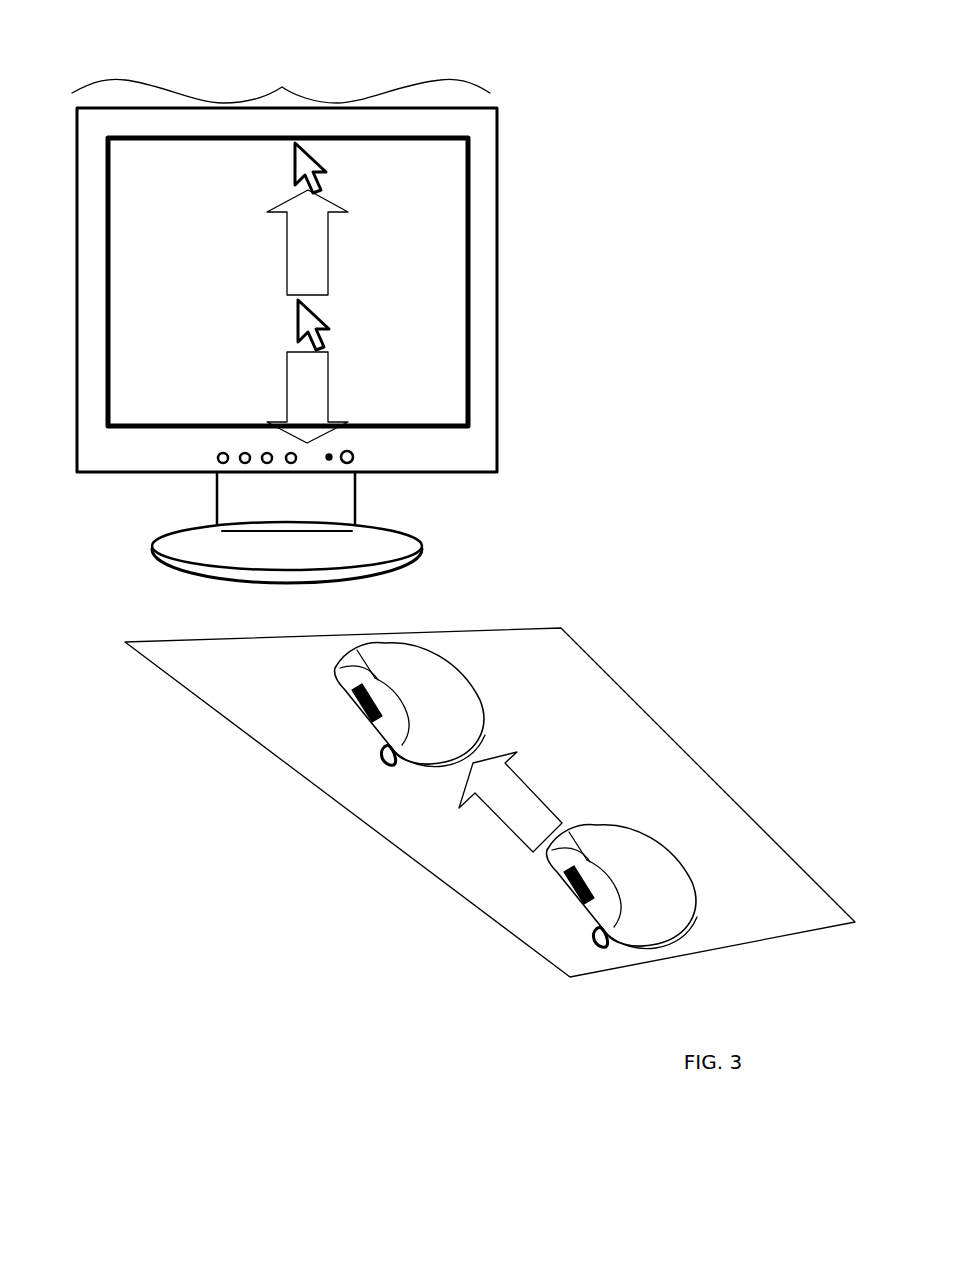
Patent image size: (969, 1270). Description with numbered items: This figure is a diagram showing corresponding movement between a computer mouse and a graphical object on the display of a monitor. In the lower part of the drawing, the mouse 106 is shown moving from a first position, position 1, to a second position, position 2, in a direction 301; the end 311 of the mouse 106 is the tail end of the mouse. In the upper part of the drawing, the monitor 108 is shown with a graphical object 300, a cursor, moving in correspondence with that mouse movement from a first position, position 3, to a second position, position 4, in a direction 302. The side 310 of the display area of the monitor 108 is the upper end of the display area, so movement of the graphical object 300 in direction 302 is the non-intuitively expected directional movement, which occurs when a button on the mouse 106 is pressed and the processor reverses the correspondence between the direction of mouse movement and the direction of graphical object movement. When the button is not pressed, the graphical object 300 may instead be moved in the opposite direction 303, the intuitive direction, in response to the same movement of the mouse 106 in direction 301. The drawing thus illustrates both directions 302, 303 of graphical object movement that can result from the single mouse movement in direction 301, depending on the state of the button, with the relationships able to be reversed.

The side 310 is at (262, 87).
The graphical object 300 is at (74, 578).
The position 4 is at (348, 175).
The direction 302 is at (287, 260).
The direction 303 is at (287, 363).
The position 3 is at (348, 328).
The monitor 108 is at (463, 404).
The mouse 106 is at (437, 680).
The direction 301 is at (510, 802).
The position 2 is at (322, 749).
The tail end 311 is at (395, 747).
The position 1 is at (548, 922).